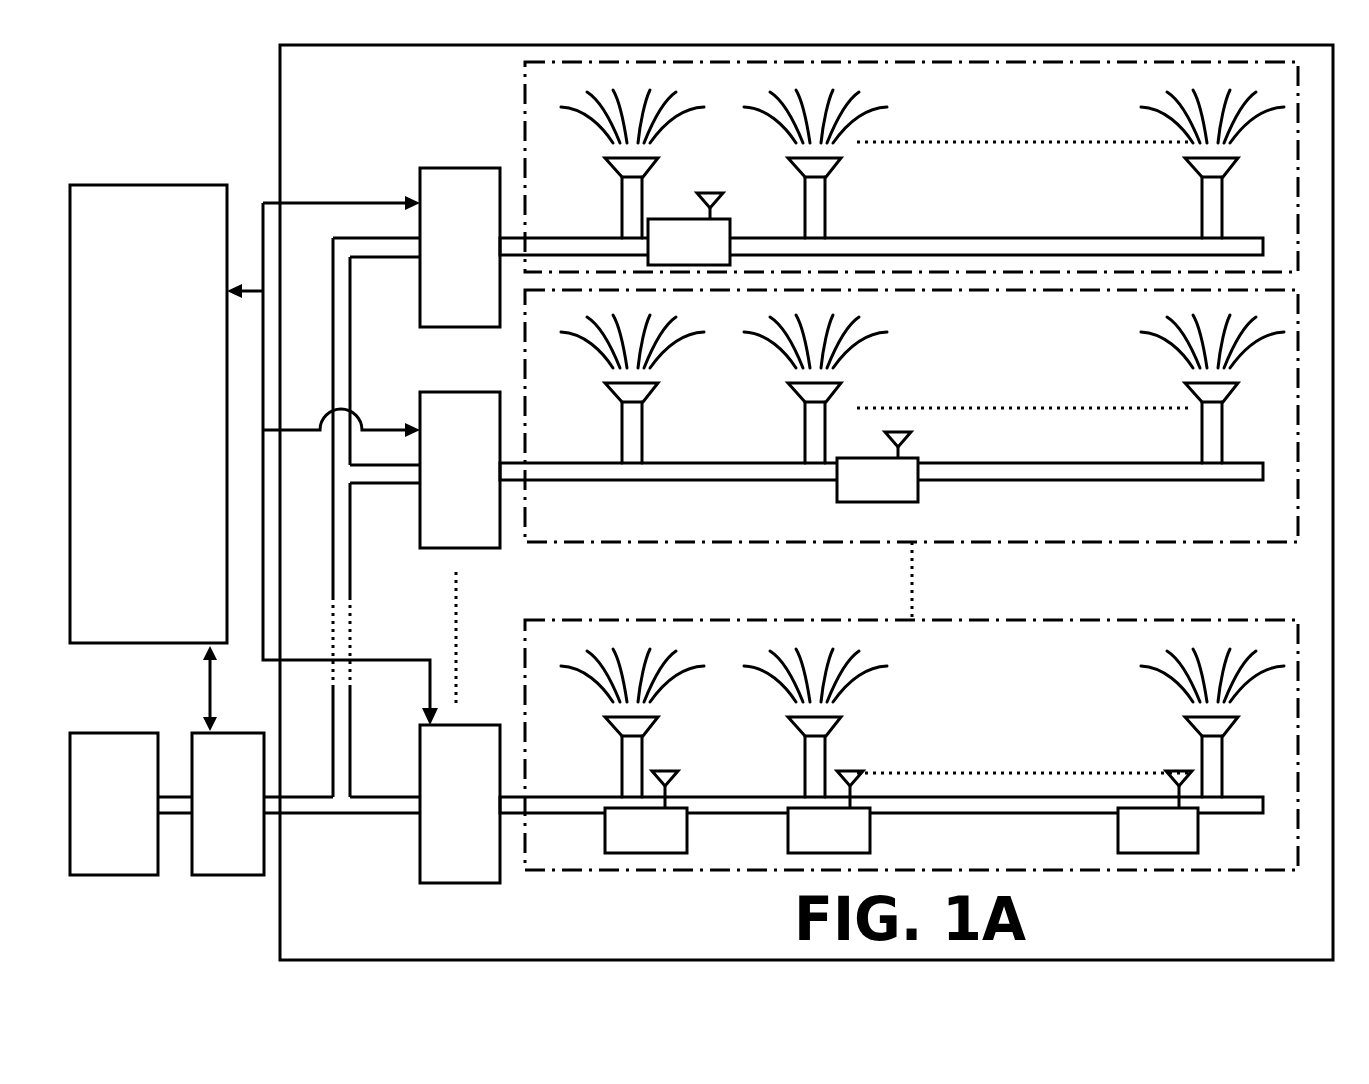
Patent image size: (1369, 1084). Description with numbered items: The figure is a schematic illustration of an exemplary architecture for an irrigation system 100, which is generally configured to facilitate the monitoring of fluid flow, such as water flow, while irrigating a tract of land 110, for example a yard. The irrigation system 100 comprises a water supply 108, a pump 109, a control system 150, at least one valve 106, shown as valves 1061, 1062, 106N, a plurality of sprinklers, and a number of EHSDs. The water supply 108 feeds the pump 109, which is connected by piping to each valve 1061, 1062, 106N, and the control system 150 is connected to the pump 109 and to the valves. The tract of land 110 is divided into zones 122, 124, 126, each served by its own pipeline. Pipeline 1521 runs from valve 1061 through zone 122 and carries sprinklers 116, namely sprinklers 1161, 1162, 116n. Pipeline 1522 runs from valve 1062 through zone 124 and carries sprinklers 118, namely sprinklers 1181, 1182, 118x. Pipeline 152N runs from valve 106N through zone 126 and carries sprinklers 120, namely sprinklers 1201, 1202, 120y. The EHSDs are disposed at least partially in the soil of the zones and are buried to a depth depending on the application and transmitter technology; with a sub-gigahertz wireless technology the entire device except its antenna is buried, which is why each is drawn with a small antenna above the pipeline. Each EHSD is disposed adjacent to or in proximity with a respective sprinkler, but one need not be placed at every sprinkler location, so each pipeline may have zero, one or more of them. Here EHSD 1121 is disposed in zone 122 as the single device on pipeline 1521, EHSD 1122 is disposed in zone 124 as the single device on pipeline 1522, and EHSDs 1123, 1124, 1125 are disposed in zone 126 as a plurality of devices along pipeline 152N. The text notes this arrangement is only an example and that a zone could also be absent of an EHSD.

The irrigation system 100 is at (166, 141).
The tract of land 110 is at (345, 146).
The control system 150 is at (130, 438).
The water supply 108 is at (96, 840).
The pump 109 is at (210, 830).
The valve 106 is at (460, 525).
The valve 1061 is at (438, 273).
The valve 1062 is at (438, 497).
The valve 106N is at (436, 831).
The zone 122 is at (899, 167).
The zone 124 is at (899, 416).
The zone 126 is at (899, 745).
The EHSD 1121 is at (666, 255).
The EHSD 1122 is at (856, 493).
The EHSD 1123 is at (646, 812).
The EHSD 1124 is at (829, 812).
The EHSD 1125 is at (1158, 812).
The sprinkler 116 is at (922, 164).
The sprinkler 1161 is at (652, 195).
The sprinkler 1162 is at (836, 195).
The sprinkler 116n is at (1190, 222).
The sprinkler 118 is at (922, 389).
The sprinkler 1181 is at (654, 410).
The sprinkler 1182 is at (838, 410).
The sprinkler 118x is at (1190, 442).
The sprinkler 120 is at (922, 723).
The sprinkler 1201 is at (657, 705).
The sprinkler 1202 is at (847, 705).
The sprinkler 120y is at (1190, 754).
The pipeline 1521 is at (1024, 230).
The pipeline 1522 is at (1073, 449).
The pipeline 152N is at (771, 788).